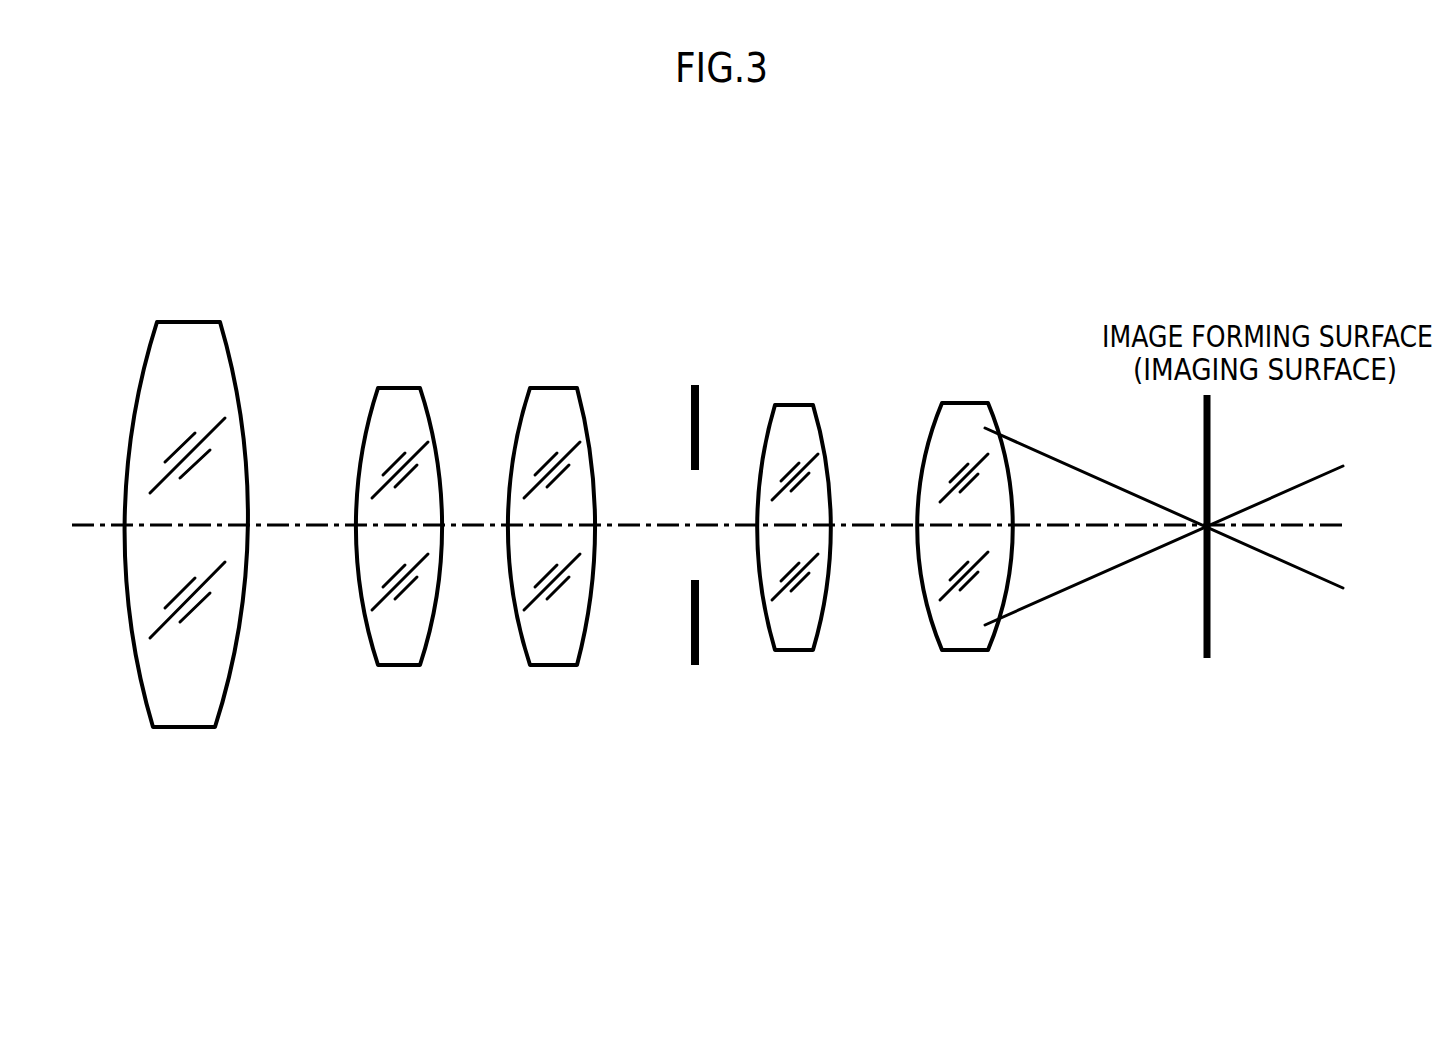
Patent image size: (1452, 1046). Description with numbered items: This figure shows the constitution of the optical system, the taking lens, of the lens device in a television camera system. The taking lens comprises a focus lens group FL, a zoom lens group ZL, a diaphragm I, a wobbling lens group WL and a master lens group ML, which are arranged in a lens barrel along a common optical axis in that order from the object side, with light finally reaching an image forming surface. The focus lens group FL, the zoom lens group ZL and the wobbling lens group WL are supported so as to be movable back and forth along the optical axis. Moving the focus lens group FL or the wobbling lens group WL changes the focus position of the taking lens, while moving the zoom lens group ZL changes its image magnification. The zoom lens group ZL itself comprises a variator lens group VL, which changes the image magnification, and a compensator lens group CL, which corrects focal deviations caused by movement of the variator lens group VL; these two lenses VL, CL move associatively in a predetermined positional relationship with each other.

The focus lens group FL is at (190, 489).
The zoom lens group ZL is at (613, 370).
The variator lens group VL is at (363, 446).
The compensator lens group CL is at (590, 446).
The diaphragm I is at (687, 548).
The wobbling lens group WL is at (788, 477).
The master lens group ML is at (973, 477).